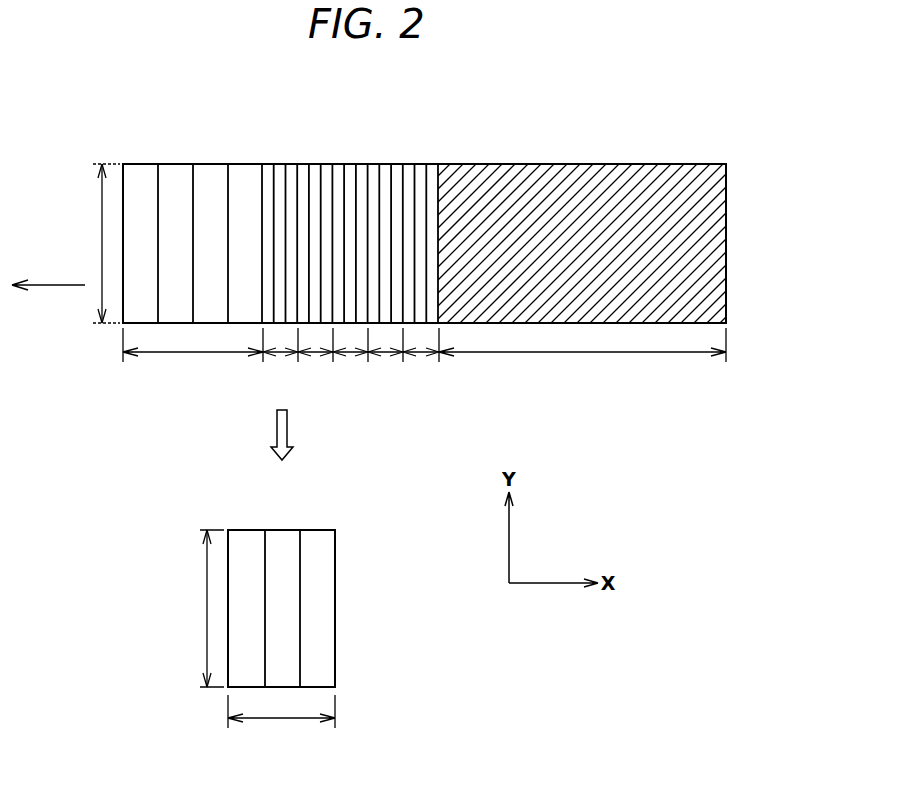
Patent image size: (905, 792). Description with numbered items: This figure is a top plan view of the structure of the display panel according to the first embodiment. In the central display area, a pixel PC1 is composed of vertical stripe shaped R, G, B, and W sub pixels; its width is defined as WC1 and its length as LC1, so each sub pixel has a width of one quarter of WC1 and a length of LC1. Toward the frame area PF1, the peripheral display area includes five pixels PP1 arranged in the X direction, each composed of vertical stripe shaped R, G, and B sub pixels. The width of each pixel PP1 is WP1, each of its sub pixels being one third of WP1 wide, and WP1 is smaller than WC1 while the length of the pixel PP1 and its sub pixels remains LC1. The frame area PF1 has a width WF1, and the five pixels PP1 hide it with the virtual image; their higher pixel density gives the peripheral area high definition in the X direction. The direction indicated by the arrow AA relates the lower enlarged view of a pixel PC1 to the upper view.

The first pixel PC1 is at (124, 156).
The second pixel PP1 is at (349, 207).
The frame area PF1 is at (575, 172).
The length of the pixel PC1 LC1 is at (144, 425).
The width of the pixel PC1 WC1 is at (229, 542).
The width of the pixel PP1 WP1 is at (351, 358).
The width of the frame area WF1 is at (582, 358).
The viewing direction arrow AA is at (48, 275).